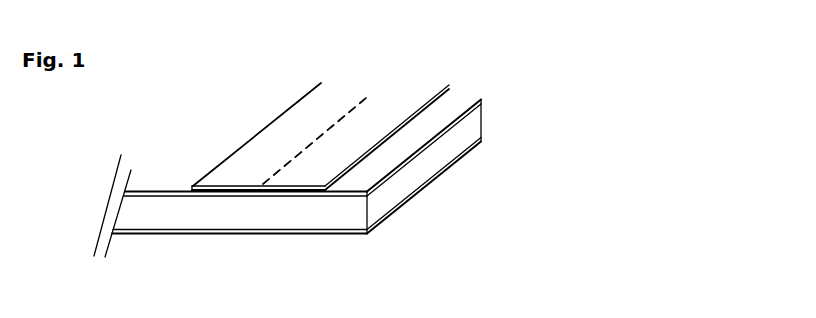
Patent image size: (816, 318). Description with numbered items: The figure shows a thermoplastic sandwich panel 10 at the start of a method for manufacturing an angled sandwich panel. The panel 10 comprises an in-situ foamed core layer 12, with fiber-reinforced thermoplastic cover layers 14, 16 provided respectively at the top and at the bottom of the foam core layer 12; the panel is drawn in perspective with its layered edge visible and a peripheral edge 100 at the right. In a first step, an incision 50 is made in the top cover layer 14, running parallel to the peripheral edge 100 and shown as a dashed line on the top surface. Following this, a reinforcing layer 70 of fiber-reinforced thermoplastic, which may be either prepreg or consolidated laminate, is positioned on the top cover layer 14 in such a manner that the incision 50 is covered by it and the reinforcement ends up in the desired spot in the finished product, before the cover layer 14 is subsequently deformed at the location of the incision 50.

The thermoplastic sandwich panel 10 is at (195, 129).
The in-situ foamed core layer 12 is at (173, 215).
The top cover layer 14 is at (172, 193).
The bottom cover layer 16 is at (215, 232).
The incision 50 is at (351, 109).
The reinforcing layer 70 is at (273, 123).
The peripheral edge 100 is at (421, 182).